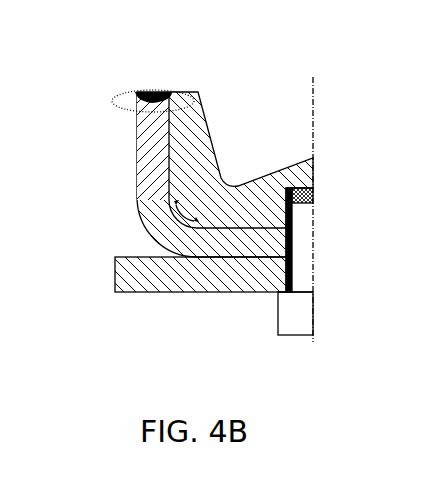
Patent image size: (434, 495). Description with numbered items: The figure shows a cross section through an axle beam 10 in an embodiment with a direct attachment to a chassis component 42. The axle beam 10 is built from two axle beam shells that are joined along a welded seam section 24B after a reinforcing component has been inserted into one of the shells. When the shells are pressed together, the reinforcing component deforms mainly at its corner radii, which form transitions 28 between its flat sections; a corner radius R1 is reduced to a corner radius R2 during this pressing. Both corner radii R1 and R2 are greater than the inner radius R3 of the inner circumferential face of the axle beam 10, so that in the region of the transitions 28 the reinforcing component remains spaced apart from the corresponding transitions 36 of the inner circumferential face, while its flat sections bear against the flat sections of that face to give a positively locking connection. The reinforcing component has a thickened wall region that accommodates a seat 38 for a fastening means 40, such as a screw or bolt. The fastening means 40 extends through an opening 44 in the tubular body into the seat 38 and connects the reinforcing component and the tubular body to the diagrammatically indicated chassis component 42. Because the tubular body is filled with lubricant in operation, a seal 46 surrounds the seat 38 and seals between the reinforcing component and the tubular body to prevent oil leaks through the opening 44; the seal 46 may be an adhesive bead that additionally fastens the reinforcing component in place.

The axle beam 10 is at (323, 25).
The welded seam section 24B is at (126, 112).
The transitions 28 is at (214, 142).
The transitions of the inner circumferential face 36 is at (155, 201).
The seat 38 is at (312, 158).
The fastening means 40 is at (276, 335).
The chassis component 42 is at (165, 294).
The opening 44 is at (268, 294).
The seal 46 is at (213, 294).
The corner radius R1 is at (186, 211).
The corner radius R2 is at (236, 183).
The inner radius R3 is at (145, 248).